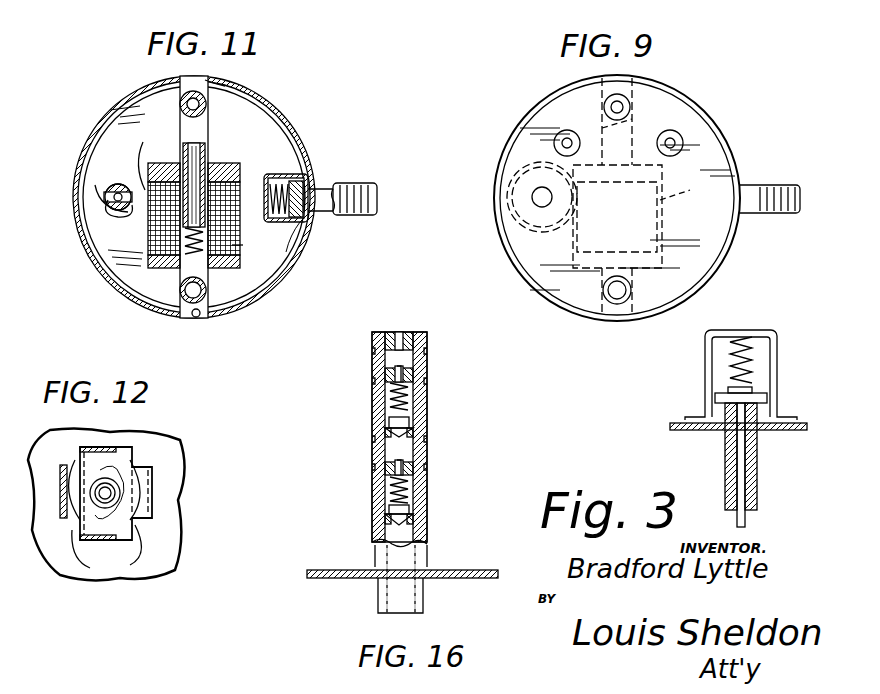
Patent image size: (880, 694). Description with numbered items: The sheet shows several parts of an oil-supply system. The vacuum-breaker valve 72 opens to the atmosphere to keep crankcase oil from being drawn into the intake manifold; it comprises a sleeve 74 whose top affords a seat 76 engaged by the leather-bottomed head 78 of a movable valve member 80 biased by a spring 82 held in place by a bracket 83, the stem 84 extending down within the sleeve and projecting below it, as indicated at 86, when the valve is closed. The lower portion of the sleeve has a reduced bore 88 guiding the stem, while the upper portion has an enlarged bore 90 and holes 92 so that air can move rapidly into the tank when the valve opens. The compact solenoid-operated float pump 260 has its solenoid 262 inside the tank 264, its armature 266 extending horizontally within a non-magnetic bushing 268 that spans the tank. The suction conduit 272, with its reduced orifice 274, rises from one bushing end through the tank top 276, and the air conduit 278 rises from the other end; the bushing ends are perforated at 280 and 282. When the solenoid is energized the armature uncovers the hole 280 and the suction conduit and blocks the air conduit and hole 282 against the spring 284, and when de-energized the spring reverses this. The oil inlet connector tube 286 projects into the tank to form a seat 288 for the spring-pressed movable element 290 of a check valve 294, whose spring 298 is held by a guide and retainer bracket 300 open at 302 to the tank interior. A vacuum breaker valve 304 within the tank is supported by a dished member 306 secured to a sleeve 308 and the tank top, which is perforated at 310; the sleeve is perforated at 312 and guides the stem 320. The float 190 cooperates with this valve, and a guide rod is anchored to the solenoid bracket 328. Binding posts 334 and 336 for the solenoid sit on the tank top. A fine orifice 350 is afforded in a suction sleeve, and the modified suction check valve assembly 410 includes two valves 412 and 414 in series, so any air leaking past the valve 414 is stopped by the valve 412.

In FIG. 3, the vacuum-breaker valve 72 is at (760, 325).
In FIG. 3, the sleeve 74 is at (725, 460).
In FIG. 3, the seat 76 is at (722, 398).
In FIG. 3, the head 78 is at (772, 396).
In FIG. 3, the movable valve member 80 is at (754, 390).
In FIG. 3, the spring 82 is at (735, 362).
In FIG. 3, the bracket 83 is at (735, 312).
In FIG. 3, the stem 84 is at (758, 482).
In FIG. 3, the projecting stem end 86 is at (745, 515).
In FIG. 3, the reduced bore 88 is at (746, 497).
In FIG. 3, the enlarged bore 90 is at (758, 465).
In FIG. 3, the holes 92 is at (725, 438).
In FIG. 11, the float 190 is at (118, 124).
In FIG. 11, the solenoid-operated float pump 260 is at (306, 116).
In FIG. 9, the solenoid-operated float pump 260 is at (732, 126).
In FIG. 11, the solenoid 262 is at (150, 232).
In FIG. 9, the solenoid 262 is at (658, 222).
In FIG. 12, the tank 264 is at (182, 493).
In FIG. 11, the armature 266 is at (196, 156).
In FIG. 11, the non-magnetic bushing 268 is at (207, 116).
In FIG. 9, the non-magnetic bushing 268 is at (632, 119).
In FIG. 11, the suction conduit 272 is at (178, 81).
In FIG. 9, the suction conduit 272 is at (604, 107).
In FIG. 9, the reduced orifice 274 is at (621, 105).
In FIG. 9, the tank top 276 is at (532, 120).
In FIG. 11, the air conduit 278 is at (181, 283).
In FIG. 9, the air conduit 278 is at (610, 301).
In FIG. 11, the bushing perforation 280 is at (220, 82).
In FIG. 11, the bushing perforation 282 is at (196, 317).
In FIG. 11, the spring 284 is at (205, 250).
In FIG. 11, the oil inlet connector tube 286 is at (360, 175).
In FIG. 9, the oil inlet connector tube 286 is at (786, 215).
In FIG. 11, the seat 288 is at (309, 186).
In FIG. 11, the movable element 290 is at (297, 176).
In FIG. 12, the movable element 290 is at (98, 460).
In FIG. 11, the check valve 294 is at (302, 226).
In FIG. 12, the check valve 294 is at (160, 522).
In FIG. 11, the spring 298 is at (240, 245).
In FIG. 12, the spring 298 is at (92, 486).
In FIG. 11, the guide and retainer bracket 300 is at (285, 174).
In FIG. 12, the guide and retainer bracket 300 is at (63, 465).
In FIG. 11, the opening 302 is at (266, 196).
In FIG. 12, the opening 302 is at (105, 515).
In FIG. 11, the vacuum breaker valve 304 is at (104, 188).
In FIG. 9, the dished member 306 is at (530, 226).
In FIG. 11, the sleeve 308 is at (101, 189).
In FIG. 9, the tank top perforation 310 is at (532, 197).
In FIG. 11, the sleeve perforation 312 is at (104, 200).
In FIG. 11, the stem 320 is at (118, 184).
In FIG. 11, the solenoid bracket 328 is at (150, 156).
In FIG. 9, the solenoid bracket 328 is at (688, 187).
In FIG. 9, the binding post 334 is at (684, 143).
In FIG. 9, the binding post 336 is at (554, 143).
In FIG. 16, the fine orifice 350 is at (398, 332).
In FIG. 16, the suction check valve assembly 410 is at (368, 453).
In FIG. 16, the valve 412 is at (390, 495).
In FIG. 16, the valve 414 is at (390, 405).